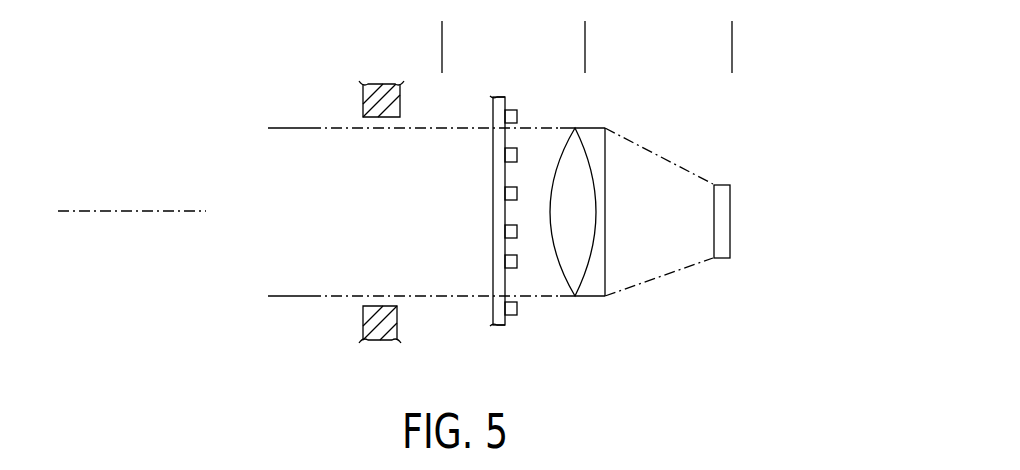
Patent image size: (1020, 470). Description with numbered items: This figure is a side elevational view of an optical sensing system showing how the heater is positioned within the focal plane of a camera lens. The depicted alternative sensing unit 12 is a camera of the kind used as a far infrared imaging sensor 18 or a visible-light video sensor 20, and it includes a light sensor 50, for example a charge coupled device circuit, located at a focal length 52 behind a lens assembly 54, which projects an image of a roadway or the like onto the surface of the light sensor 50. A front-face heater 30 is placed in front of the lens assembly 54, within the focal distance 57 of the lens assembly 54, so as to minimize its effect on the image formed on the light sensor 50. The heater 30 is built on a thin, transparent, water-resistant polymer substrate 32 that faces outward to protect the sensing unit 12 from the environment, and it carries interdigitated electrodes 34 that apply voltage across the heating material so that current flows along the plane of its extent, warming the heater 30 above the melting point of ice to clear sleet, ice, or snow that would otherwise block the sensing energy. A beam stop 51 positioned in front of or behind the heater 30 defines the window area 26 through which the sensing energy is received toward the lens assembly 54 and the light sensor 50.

The far infrared imaging sensor 18 is at (772, 69).
The visible-light video sensor 20 is at (748, 164).
The window area 26 is at (289, 128).
The interdigitated electrodes 34 is at (131, 211).
The focal distance 57 is at (585, 48).
The focal length 52 is at (732, 48).
The beam stop 51 is at (364, 330).
The substrate 32 is at (496, 246).
The front-face heater 30 is at (527, 335).
The lens assembly 54 is at (603, 300).
The sensing unit 12 is at (714, 140).
The light sensor 50 is at (730, 218).